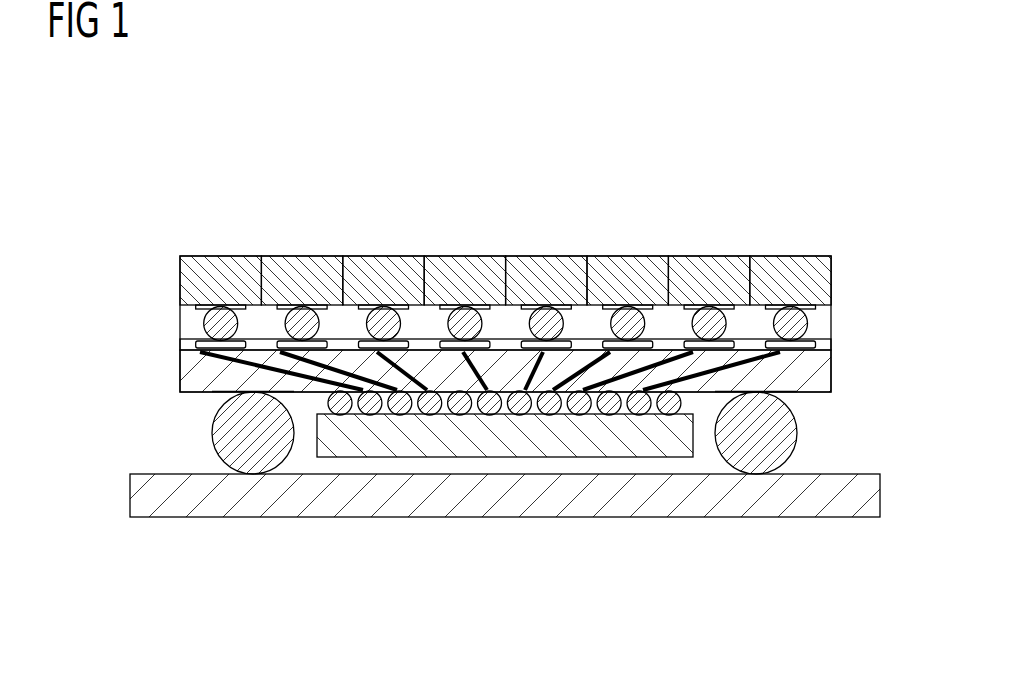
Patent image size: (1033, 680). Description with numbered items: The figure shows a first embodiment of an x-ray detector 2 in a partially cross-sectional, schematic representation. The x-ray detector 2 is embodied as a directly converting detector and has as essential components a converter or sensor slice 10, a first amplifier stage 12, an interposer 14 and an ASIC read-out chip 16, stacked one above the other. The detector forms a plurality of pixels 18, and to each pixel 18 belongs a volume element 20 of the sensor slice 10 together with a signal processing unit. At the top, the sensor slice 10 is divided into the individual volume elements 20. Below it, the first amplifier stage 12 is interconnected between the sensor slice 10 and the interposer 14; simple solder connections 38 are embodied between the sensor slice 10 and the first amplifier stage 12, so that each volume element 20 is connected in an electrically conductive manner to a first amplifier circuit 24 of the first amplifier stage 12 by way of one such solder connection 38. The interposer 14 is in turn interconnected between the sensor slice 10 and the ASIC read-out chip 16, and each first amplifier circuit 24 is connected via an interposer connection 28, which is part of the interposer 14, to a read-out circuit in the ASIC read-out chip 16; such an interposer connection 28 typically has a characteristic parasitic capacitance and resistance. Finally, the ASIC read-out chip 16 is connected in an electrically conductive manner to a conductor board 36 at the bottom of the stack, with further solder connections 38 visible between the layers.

The x-ray detector 2 is at (226, 132).
The sensor slice 10 is at (848, 280).
The first amplifier stage 12 is at (848, 343).
The interposer 14 is at (848, 375).
The ASIC read-out chip 16 is at (623, 448).
The pixel 18 is at (637, 238).
The volume element 20 is at (312, 257).
The first amplifier circuit 24 is at (195, 344).
The interposer connection 28 is at (212, 392).
The conductor board 36 is at (143, 490).
The solder connection 38 is at (383, 320).